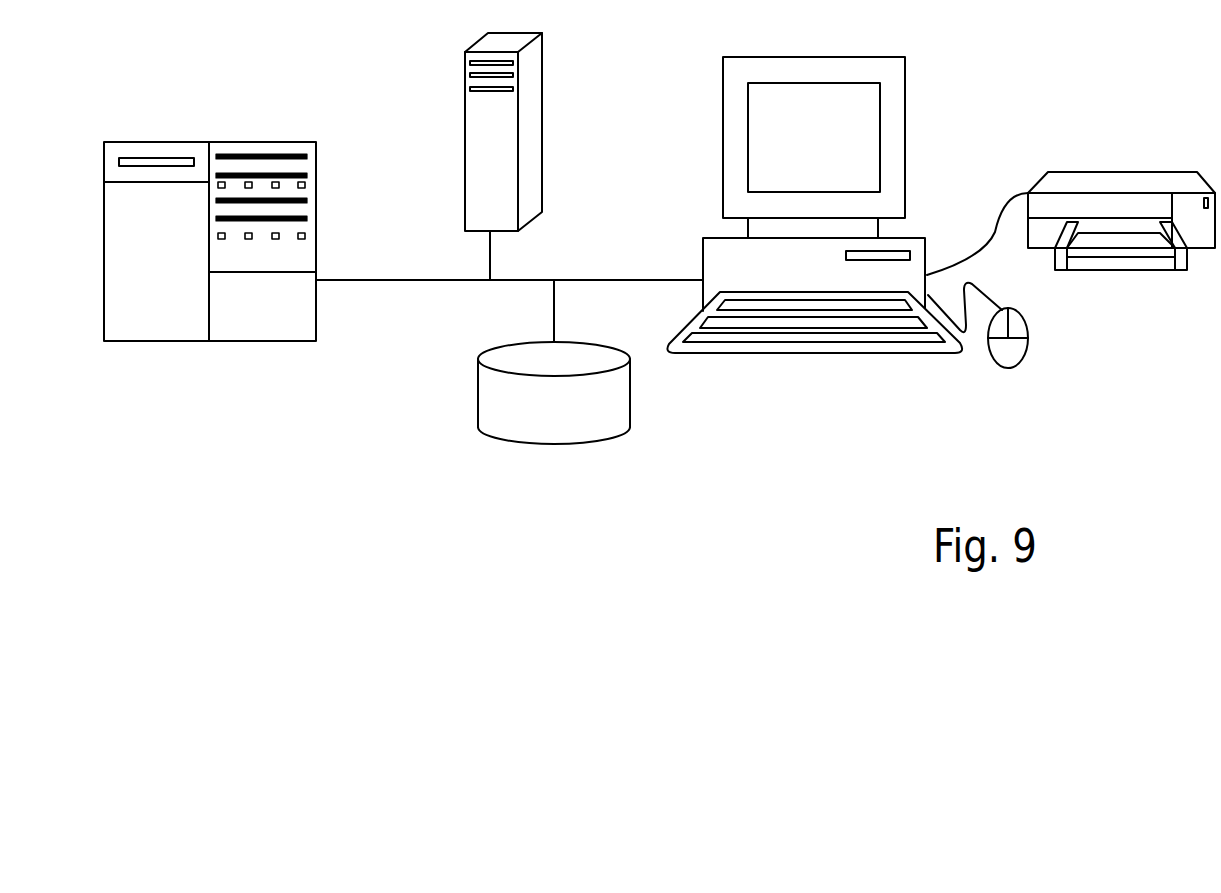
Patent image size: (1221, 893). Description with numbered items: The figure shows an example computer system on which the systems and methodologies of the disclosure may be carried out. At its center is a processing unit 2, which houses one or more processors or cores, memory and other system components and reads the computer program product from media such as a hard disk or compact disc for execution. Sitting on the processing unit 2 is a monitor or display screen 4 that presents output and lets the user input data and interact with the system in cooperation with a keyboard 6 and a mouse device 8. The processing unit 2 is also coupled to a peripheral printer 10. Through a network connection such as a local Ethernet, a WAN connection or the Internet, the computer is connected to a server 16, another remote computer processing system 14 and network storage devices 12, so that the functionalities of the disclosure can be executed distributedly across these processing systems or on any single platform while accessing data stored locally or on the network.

The processing unit 2 is at (708, 262).
The monitor or display screen 4 is at (905, 155).
The keyboard 6 is at (872, 355).
The mouse device 8 is at (1028, 353).
The printer 10 is at (1122, 172).
The network storage devices 12 is at (573, 442).
The remote computer processing system 14 is at (542, 120).
The server 16 is at (257, 140).